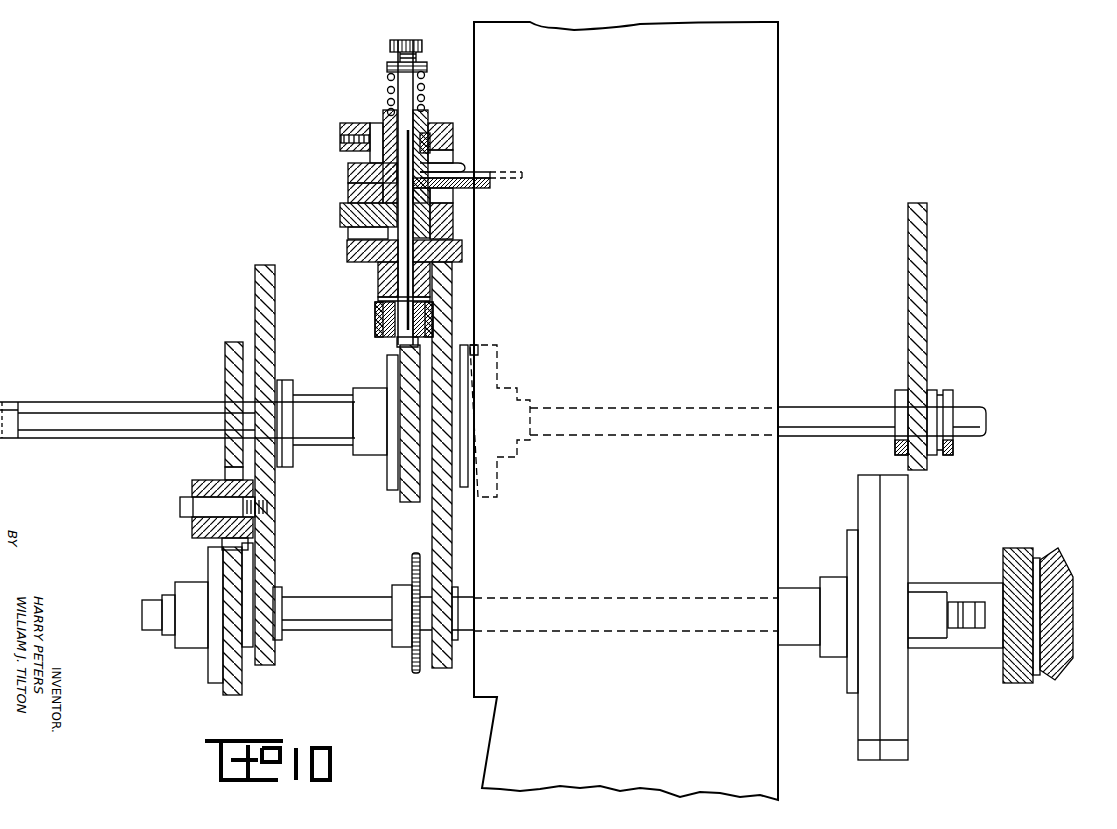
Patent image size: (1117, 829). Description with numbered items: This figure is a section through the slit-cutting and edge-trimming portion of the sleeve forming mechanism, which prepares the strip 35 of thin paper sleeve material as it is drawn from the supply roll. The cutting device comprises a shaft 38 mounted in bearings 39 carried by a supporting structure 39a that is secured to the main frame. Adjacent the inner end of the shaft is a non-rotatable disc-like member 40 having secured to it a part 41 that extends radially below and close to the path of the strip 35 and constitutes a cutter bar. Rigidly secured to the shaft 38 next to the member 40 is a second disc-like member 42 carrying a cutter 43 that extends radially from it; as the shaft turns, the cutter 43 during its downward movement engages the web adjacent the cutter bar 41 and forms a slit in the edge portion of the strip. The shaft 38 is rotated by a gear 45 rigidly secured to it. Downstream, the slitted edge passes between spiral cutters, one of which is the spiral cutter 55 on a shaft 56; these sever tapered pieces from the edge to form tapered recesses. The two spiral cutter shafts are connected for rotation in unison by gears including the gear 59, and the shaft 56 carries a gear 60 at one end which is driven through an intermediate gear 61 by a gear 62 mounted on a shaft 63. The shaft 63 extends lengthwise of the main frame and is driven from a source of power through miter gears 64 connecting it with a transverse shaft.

The strip 35 is at (490, 76).
The shaft 38 is at (400, 280).
The bearings 39 is at (445, 222).
The supporting structure 39a is at (450, 293).
The non-rotatable disc-like member 40 is at (465, 166).
The cutter bar 41 is at (498, 178).
The second disc-like member 42 is at (350, 192).
The cutter 43 is at (490, 190).
The gear 45 is at (350, 254).
The spiral cutter 55 is at (475, 347).
The shaft 56 is at (641, 405).
The gear 59 is at (407, 497).
The gear 60 is at (227, 368).
The intermediate gear 61 is at (217, 537).
The gear 62 is at (242, 687).
The shaft 63 is at (330, 632).
The miter gears 64 is at (1066, 630).